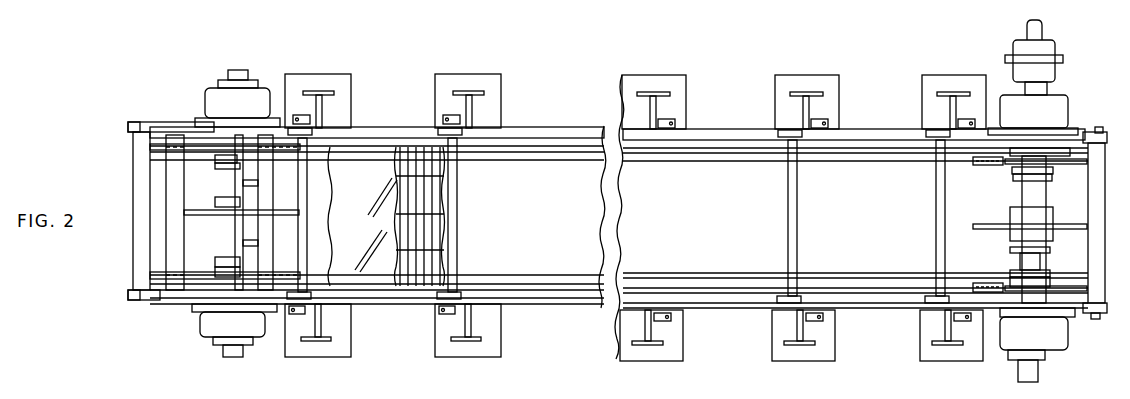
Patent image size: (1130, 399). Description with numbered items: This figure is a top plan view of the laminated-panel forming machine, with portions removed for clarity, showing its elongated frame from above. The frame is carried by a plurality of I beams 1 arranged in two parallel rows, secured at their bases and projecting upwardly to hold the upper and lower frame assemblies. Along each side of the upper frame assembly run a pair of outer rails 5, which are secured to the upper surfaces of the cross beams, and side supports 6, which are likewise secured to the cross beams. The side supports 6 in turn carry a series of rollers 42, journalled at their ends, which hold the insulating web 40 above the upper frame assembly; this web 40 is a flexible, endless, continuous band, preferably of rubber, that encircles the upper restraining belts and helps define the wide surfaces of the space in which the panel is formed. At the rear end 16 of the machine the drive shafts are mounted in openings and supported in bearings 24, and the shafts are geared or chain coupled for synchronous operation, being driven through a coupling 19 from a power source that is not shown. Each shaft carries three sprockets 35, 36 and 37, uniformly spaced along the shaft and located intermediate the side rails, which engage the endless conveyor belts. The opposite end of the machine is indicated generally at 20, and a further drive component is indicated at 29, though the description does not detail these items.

The I beams 1 is at (314, 340).
The outer rails 5 is at (558, 158).
The side supports 6 is at (553, 130).
The rear end 16 is at (1108, 305).
The coupling 19 is at (1050, 50).
The drive end assembly 20 is at (115, 147).
The bearings 24 is at (1058, 118).
The motor 29 is at (210, 325).
The sprockets 35 is at (215, 150).
The sprockets 36 is at (215, 215).
The sprockets 37 is at (210, 274).
The insulating web 40 is at (364, 191).
The rollers 42 is at (457, 240).